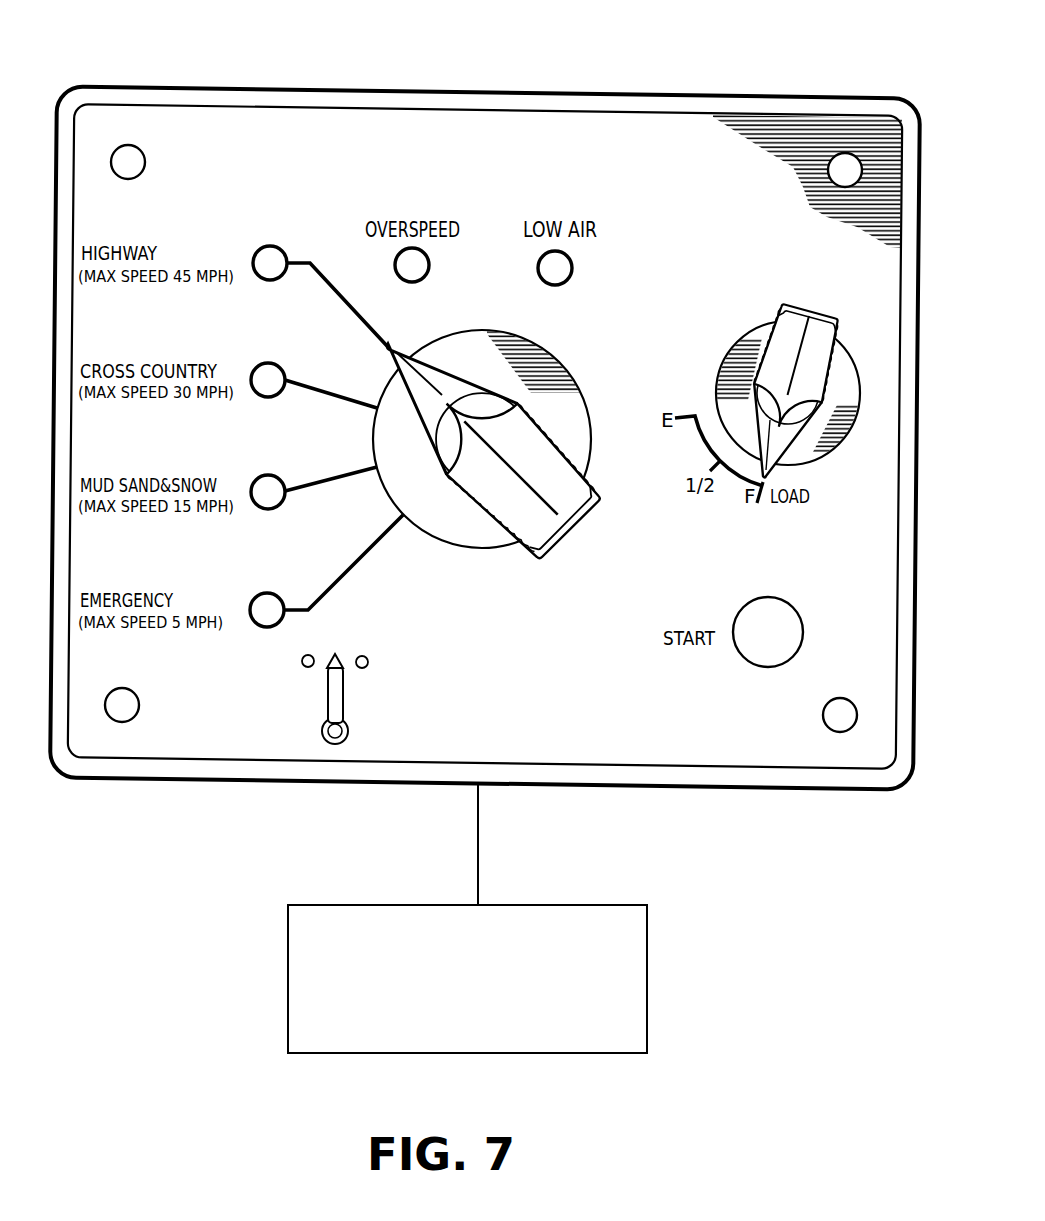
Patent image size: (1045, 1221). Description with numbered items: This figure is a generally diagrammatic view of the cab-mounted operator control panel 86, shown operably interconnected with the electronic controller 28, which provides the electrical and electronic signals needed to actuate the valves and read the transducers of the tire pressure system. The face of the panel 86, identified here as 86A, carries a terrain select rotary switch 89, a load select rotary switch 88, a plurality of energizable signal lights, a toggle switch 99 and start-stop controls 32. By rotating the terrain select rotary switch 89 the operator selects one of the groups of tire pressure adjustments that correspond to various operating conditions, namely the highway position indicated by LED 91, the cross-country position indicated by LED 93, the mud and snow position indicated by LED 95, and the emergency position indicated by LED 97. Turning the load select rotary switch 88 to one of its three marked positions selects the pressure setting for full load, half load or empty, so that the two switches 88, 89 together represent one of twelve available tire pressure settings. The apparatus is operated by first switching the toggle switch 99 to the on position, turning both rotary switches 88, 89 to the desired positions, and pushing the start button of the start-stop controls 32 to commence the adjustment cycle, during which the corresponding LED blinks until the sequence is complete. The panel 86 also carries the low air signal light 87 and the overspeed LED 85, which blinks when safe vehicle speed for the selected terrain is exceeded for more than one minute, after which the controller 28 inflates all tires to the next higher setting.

The panel 86 is at (576, 77).
The face plate of control panel 86A is at (387, 130).
The LED 91 is at (268, 246).
The LED 93 is at (267, 363).
The LED 95 is at (268, 475).
The LED 97 is at (267, 593).
The overspeed LED 85 is at (424, 277).
The low air signal light 87 is at (567, 280).
The terrain select rotary switch 89 is at (488, 550).
The load select rotary switch 88 is at (765, 323).
The start-stop controls 32 is at (777, 597).
The toggle switch 99 is at (327, 695).
The electronic controller 28 is at (500, 1053).